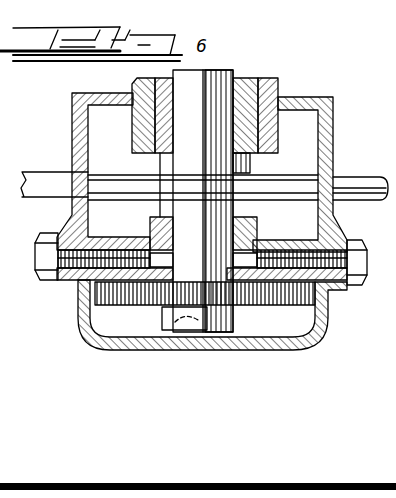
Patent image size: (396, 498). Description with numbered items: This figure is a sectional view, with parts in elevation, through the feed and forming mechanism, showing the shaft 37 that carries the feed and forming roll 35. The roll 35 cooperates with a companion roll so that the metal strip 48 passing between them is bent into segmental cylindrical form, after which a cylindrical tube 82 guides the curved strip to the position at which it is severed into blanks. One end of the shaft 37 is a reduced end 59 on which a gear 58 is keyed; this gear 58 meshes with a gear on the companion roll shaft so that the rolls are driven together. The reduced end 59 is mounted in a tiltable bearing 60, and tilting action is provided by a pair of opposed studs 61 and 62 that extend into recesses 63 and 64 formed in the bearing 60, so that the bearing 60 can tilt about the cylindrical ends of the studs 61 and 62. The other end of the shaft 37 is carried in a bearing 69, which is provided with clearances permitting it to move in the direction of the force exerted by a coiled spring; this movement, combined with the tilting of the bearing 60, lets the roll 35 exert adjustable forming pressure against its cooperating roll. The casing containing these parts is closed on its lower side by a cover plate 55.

The shaft 37 is at (207, 88).
The bearing 69 is at (246, 105).
The metal strip 48 is at (44, 183).
The roll 35 is at (292, 176).
The cylindrical tube 82 is at (352, 200).
The recess 63 is at (152, 222).
The tiltable bearing 60 is at (252, 224).
The recess 64 is at (270, 250).
The stud 61 is at (72, 285).
The stud 62 is at (326, 296).
The gear 58 is at (254, 306).
The reduced end 59 is at (205, 332).
The cover plate 55 is at (243, 347).